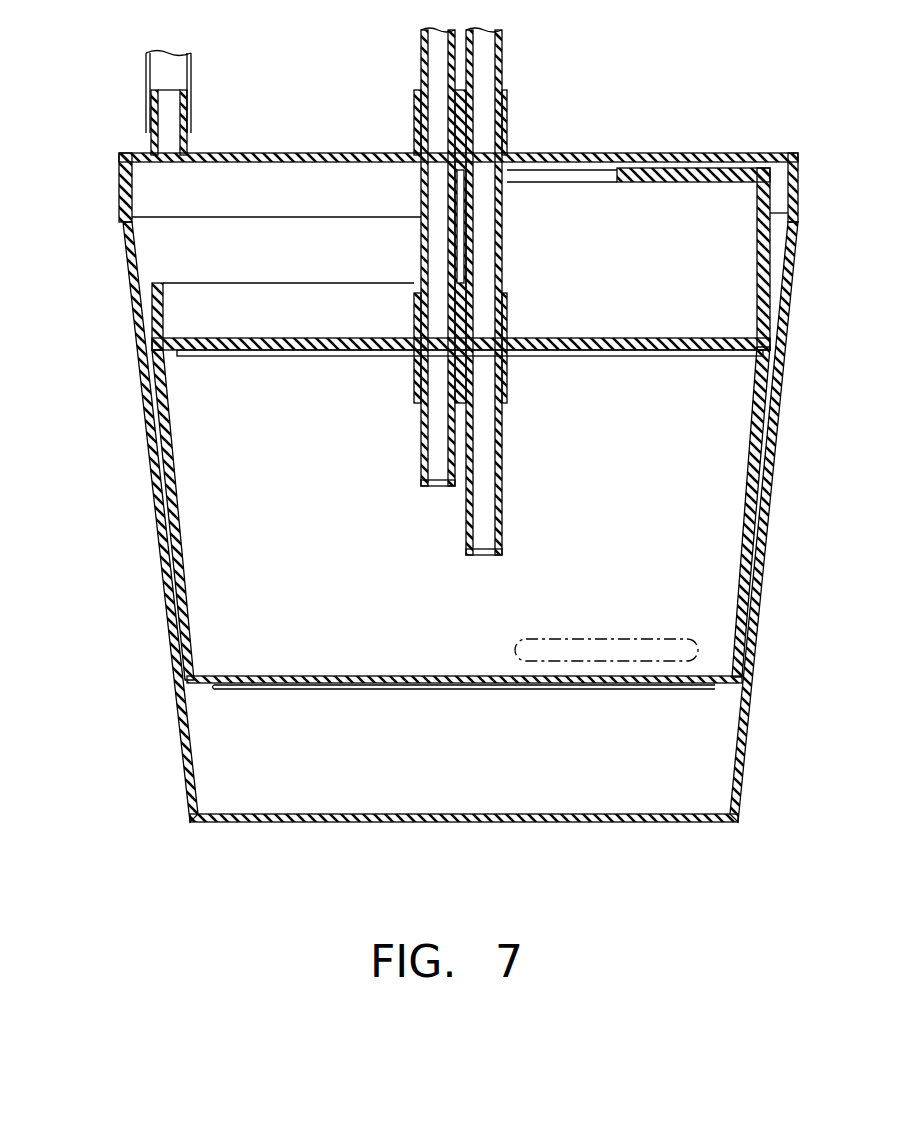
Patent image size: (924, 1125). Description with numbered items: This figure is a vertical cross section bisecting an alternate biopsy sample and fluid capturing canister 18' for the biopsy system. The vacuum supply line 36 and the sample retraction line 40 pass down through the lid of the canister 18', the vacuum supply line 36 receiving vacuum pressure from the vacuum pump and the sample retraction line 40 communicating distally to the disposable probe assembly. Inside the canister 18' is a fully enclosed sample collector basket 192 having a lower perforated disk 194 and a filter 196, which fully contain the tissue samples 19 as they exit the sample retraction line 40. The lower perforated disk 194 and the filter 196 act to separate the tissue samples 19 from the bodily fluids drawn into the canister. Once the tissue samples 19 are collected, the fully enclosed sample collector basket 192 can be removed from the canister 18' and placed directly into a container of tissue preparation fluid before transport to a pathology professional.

The biopsy sample and fluid capturing canister 18' is at (412, 522).
The biopsy tissue samples 19 is at (533, 648).
The vacuum supply line 36 is at (503, 497).
The sample retraction line 40 is at (421, 440).
The fully enclosed sample collector basket 192 is at (752, 504).
The lower perforated disk 194 is at (280, 683).
The filter 196 is at (400, 689).